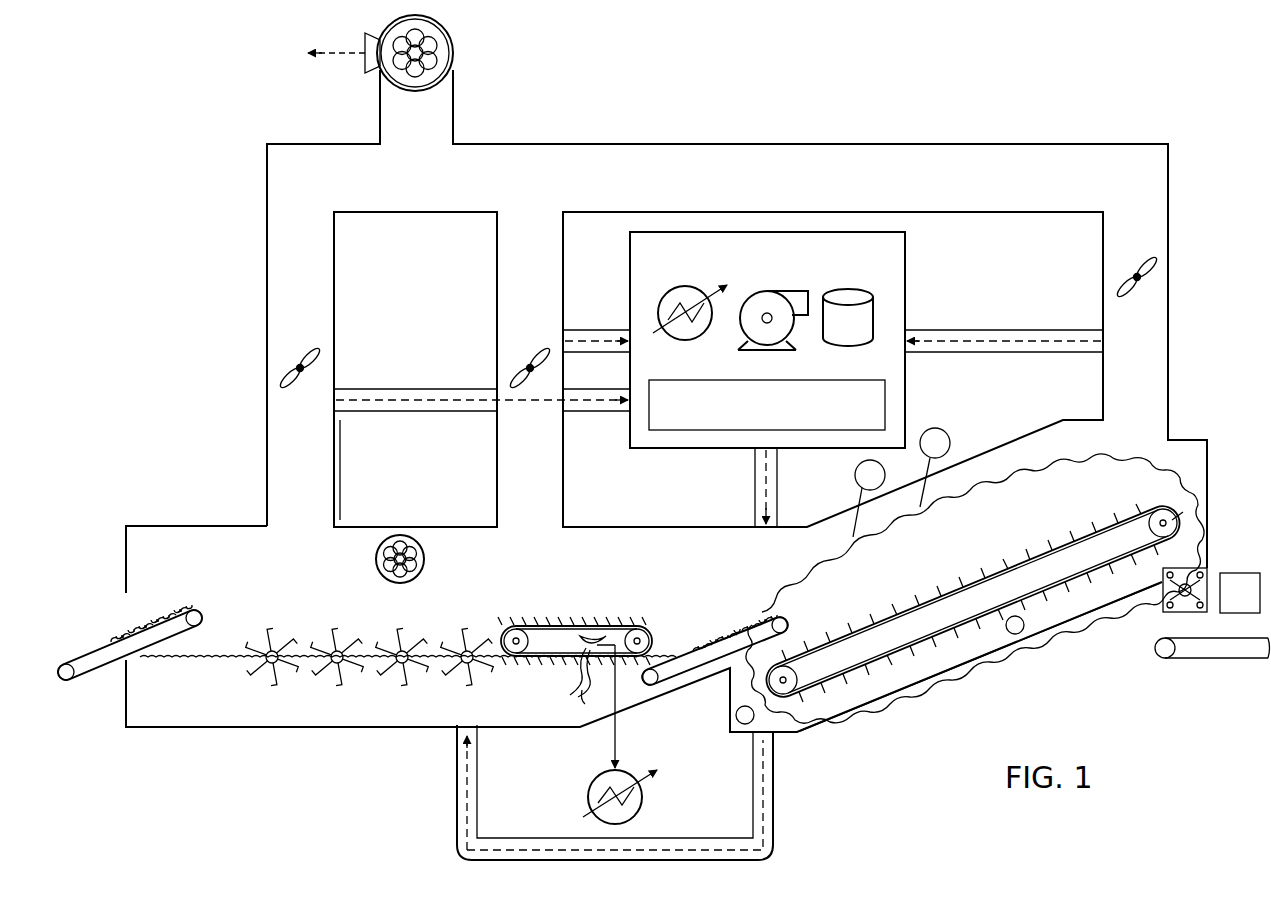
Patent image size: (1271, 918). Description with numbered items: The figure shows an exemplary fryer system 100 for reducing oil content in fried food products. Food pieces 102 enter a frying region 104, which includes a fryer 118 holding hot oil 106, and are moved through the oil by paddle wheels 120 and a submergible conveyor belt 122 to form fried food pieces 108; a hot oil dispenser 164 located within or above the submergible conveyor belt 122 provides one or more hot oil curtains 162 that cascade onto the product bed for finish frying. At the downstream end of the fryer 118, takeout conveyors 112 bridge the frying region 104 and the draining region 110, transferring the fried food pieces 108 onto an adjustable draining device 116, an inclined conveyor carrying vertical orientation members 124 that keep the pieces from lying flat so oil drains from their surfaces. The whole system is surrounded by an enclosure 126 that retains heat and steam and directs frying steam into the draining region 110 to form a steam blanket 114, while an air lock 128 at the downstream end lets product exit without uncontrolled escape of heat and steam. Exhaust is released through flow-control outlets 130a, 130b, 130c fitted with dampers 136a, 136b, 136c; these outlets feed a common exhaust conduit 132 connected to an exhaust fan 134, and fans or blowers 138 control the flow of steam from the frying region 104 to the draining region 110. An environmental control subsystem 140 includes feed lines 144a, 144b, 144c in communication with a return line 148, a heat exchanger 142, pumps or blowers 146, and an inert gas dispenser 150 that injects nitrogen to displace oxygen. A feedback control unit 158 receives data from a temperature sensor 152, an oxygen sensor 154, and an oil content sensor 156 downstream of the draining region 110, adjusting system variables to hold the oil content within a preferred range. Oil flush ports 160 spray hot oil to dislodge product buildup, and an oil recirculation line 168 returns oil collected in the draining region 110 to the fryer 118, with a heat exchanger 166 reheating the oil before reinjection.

The fryer system 100 is at (912, 70).
The food pieces 102 is at (120, 610).
The frying region 104 is at (343, 780).
The hot oil 106 is at (126, 697).
The fried food pieces 108 is at (715, 615).
The draining region 110 is at (848, 745).
The takeout conveyors 112 is at (792, 614).
The steam blanket 114 is at (1118, 457).
The adjustable draining device 116 is at (900, 607).
The fryer 118 is at (287, 728).
The paddle wheels 120 is at (268, 648).
The submergible conveyor belt 122 is at (518, 624).
The vertical orientation members 124 is at (1172, 490).
The enclosure 126 is at (413, 527).
The air lock 128 is at (1150, 612).
The flow-control outlet 130a is at (267, 338).
The flow-control outlet 130b is at (497, 300).
The flow-control outlet 130c is at (1172, 295).
The exhaust conduit 132 is at (380, 108).
The exhaust fan 134 is at (455, 52).
The damper 136a is at (303, 358).
The damper 136b is at (533, 358).
The damper 136c is at (1138, 262).
The fans or blowers 138 is at (377, 555).
The environmental control subsystem 140 is at (908, 280).
The heat exchanger 142 is at (697, 292).
The feed line 144a is at (413, 389).
The feed line 144b is at (603, 330).
The feed line 144c is at (1010, 330).
The pumps or blowers 146 is at (782, 292).
The return line 148 is at (755, 486).
The inert gas dispenser 150 is at (858, 290).
The temperature sensor 152 is at (855, 478).
The oxygen sensor 154 is at (938, 428).
The oil content sensor 156 is at (1233, 572).
The feedback control unit 158 is at (767, 405).
The oil flush ports 160 is at (736, 717).
The hot oil curtains 162 is at (560, 702).
The hot oil dispenser 164 is at (593, 632).
The heat exchanger 166 is at (641, 795).
The oil recirculation line 168 is at (457, 780).